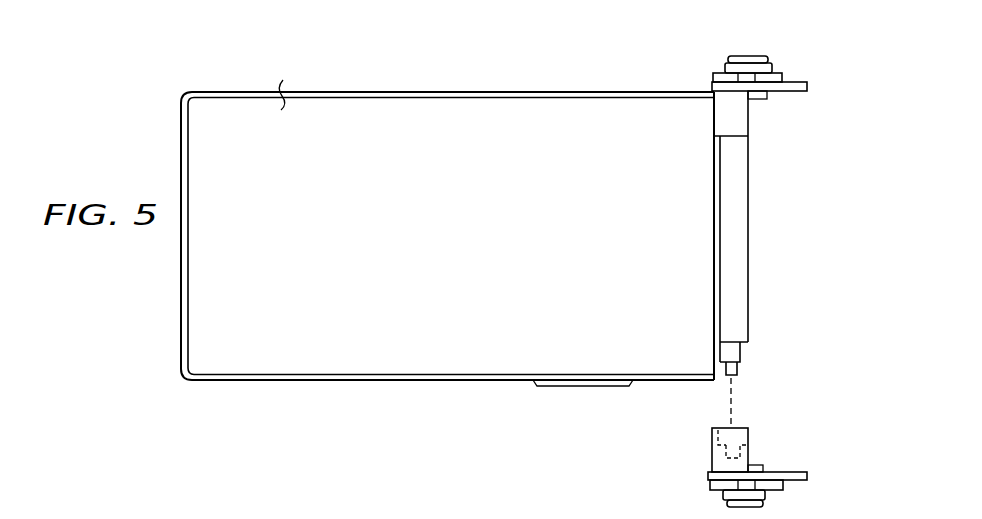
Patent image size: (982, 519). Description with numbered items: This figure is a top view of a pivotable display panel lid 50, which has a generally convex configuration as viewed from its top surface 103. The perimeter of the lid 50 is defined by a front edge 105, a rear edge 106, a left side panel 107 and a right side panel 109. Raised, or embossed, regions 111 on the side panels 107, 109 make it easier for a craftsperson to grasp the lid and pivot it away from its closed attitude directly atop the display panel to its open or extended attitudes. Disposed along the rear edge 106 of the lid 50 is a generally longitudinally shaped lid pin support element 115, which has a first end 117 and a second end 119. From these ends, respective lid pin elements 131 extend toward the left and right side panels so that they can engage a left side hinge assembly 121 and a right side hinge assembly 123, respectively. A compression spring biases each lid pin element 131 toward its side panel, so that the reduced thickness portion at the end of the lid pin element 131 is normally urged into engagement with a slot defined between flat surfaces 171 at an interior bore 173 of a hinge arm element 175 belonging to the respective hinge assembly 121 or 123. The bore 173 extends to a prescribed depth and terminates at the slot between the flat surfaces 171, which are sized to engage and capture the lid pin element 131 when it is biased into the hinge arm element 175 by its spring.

The lid 50 is at (487, 67).
The top surface 103 is at (279, 78).
The front edge 105 is at (181, 260).
The rear edge 106 is at (712, 362).
The left side panel 107 is at (563, 92).
The right side panel 109 is at (452, 380).
The raised regions 111 is at (553, 386).
The lid pin support element 115 is at (740, 262).
The first end 117 is at (750, 136).
The second end 119 is at (742, 348).
The left side hinge assembly 121 is at (783, 79).
The right side hinge assembly 123 is at (775, 490).
The lid pin element 131 is at (740, 368).
The flat surfaces 171 is at (750, 455).
The interior bore 173 is at (752, 433).
The hinge arm element 175 is at (712, 468).